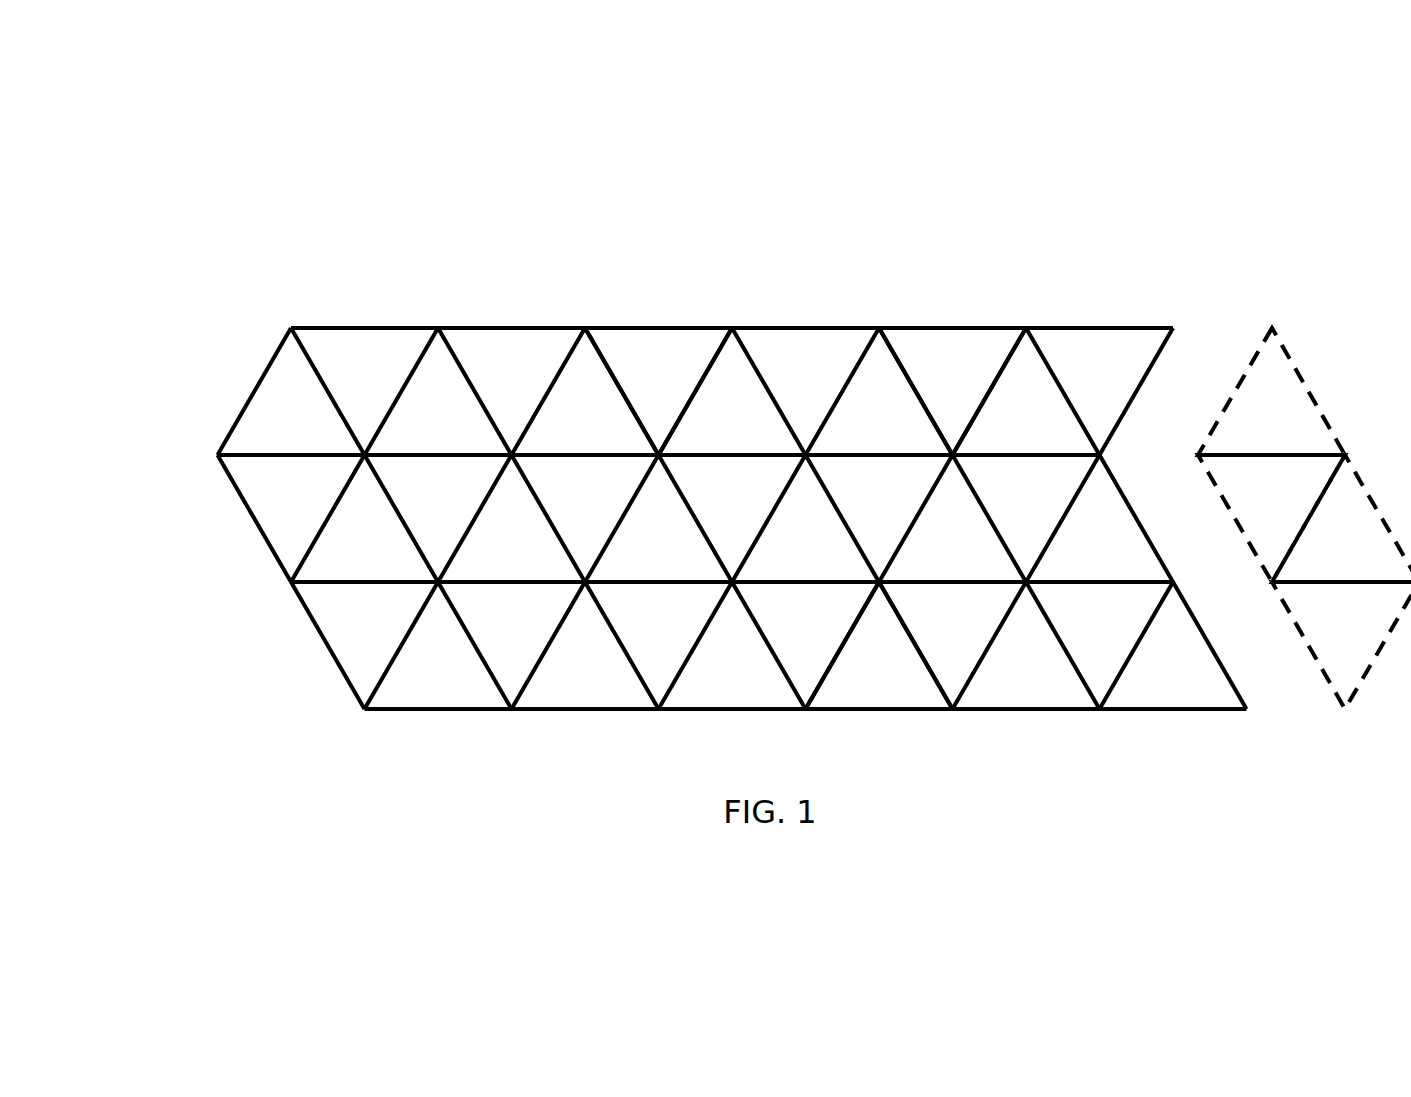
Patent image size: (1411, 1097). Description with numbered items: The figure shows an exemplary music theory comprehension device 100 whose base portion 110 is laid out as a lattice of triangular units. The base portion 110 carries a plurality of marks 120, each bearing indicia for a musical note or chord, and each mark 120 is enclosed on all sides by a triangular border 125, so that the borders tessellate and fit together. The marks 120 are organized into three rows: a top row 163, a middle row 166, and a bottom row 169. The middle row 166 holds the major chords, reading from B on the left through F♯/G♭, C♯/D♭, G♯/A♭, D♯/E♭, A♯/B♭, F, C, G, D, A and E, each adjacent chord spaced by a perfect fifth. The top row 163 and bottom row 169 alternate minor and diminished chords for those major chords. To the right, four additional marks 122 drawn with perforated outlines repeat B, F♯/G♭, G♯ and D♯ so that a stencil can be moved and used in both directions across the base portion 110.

The music theory comprehension device 100 is at (646, 451).
The base portion 110 is at (646, 492).
The mark 120 is at (645, 343).
The additional mark 122 is at (1284, 397).
The border 125 is at (707, 325).
The top row 163 is at (222, 392).
The middle row 166 is at (228, 523).
The bottom row 169 is at (288, 655).